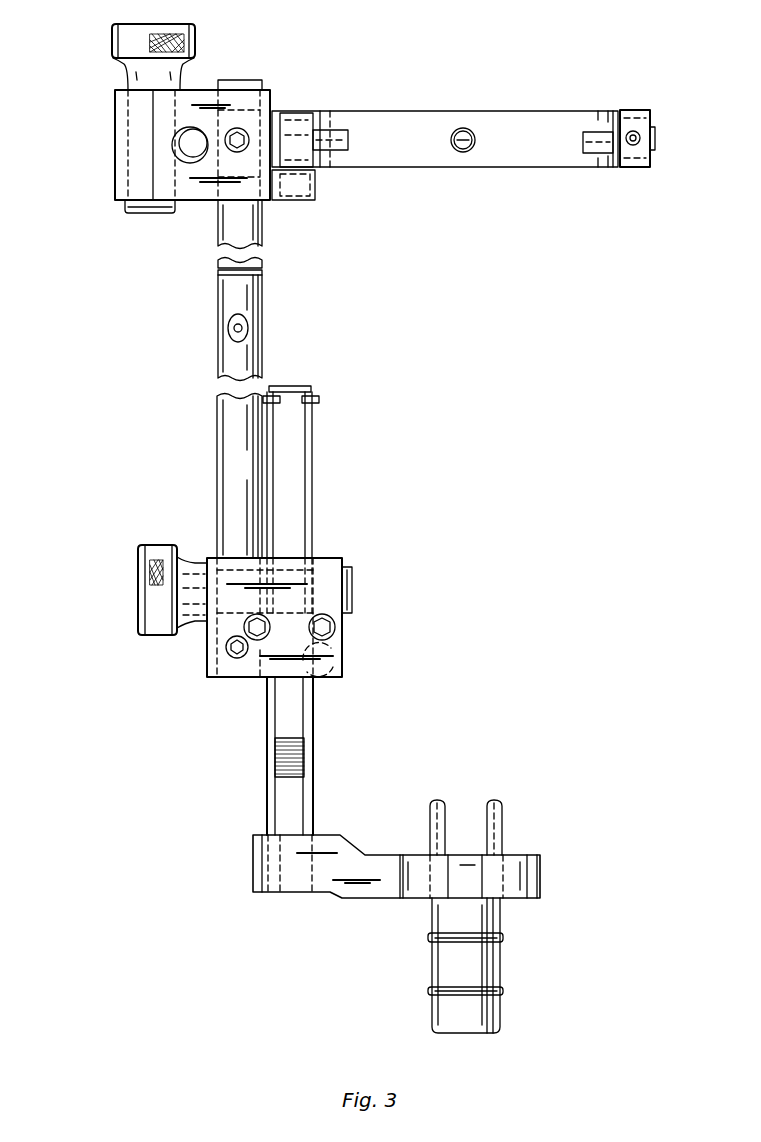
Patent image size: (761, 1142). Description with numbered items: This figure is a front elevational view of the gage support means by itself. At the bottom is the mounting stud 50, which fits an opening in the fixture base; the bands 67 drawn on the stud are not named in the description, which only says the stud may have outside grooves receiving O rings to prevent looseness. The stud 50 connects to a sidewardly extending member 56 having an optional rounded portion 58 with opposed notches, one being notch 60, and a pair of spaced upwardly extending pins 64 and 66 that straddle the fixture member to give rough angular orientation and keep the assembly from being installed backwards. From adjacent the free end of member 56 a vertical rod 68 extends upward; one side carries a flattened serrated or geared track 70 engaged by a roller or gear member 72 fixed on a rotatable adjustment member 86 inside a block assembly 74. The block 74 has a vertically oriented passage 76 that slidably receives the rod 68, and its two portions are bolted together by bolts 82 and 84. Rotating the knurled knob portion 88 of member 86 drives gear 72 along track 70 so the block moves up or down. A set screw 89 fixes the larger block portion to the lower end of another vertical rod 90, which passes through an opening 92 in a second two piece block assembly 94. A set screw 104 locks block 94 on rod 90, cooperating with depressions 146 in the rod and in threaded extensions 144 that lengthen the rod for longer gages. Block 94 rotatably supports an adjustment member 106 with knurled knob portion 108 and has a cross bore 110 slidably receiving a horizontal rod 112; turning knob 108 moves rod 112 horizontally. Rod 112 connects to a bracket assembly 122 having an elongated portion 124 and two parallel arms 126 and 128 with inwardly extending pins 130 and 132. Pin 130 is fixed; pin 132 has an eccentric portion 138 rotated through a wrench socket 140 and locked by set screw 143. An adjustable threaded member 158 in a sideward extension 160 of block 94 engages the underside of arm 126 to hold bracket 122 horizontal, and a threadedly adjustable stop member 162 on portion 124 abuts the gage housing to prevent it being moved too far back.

The mounting stud 50 is at (470, 968).
The sidewardly extending member 56 is at (380, 888).
The rounded portion 58 is at (522, 877).
The notch 60 is at (468, 882).
The pin 64 is at (433, 830).
The pin 66 is at (497, 818).
The retaining rings 67 is at (428, 937).
The vertical rod 68 is at (312, 798).
The serrated or geared surface or track 70 is at (292, 727).
The roller or gear member 72 is at (293, 553).
The block assembly 74 is at (346, 675).
The vertically oriented passage 76 is at (335, 655).
The bolt 82 is at (250, 623).
The bolt 84 is at (325, 627).
The rotatable adjustment member 86 is at (352, 585).
The knurled knob portion 88 is at (158, 600).
The set screw 89 is at (237, 652).
The vertical rod 90 is at (237, 472).
The opening 92 is at (276, 90).
The two piece block assembly 94 is at (203, 84).
The set screw 104 is at (238, 143).
The adjustment member 106 is at (150, 218).
The knurled knob portion 108 is at (128, 41).
The cross bore 110 is at (173, 147).
The horizontal rod 112 is at (195, 130).
The bracket assembly 122 is at (497, 168).
The elongated portion 124 is at (418, 128).
The arm 126 is at (300, 118).
The arm 128 is at (637, 165).
The pin 130 is at (328, 138).
The pin 132 is at (597, 157).
The eccentric portion 138 is at (594, 138).
The wrench socket 140 is at (657, 138).
The set screw 143 is at (633, 131).
The extension 144 is at (263, 232).
The depression 146 is at (248, 328).
The adjustable threaded member 158 is at (318, 185).
The sideward extension 160 is at (279, 192).
The threadedly adjustable stop member 162 is at (475, 139).